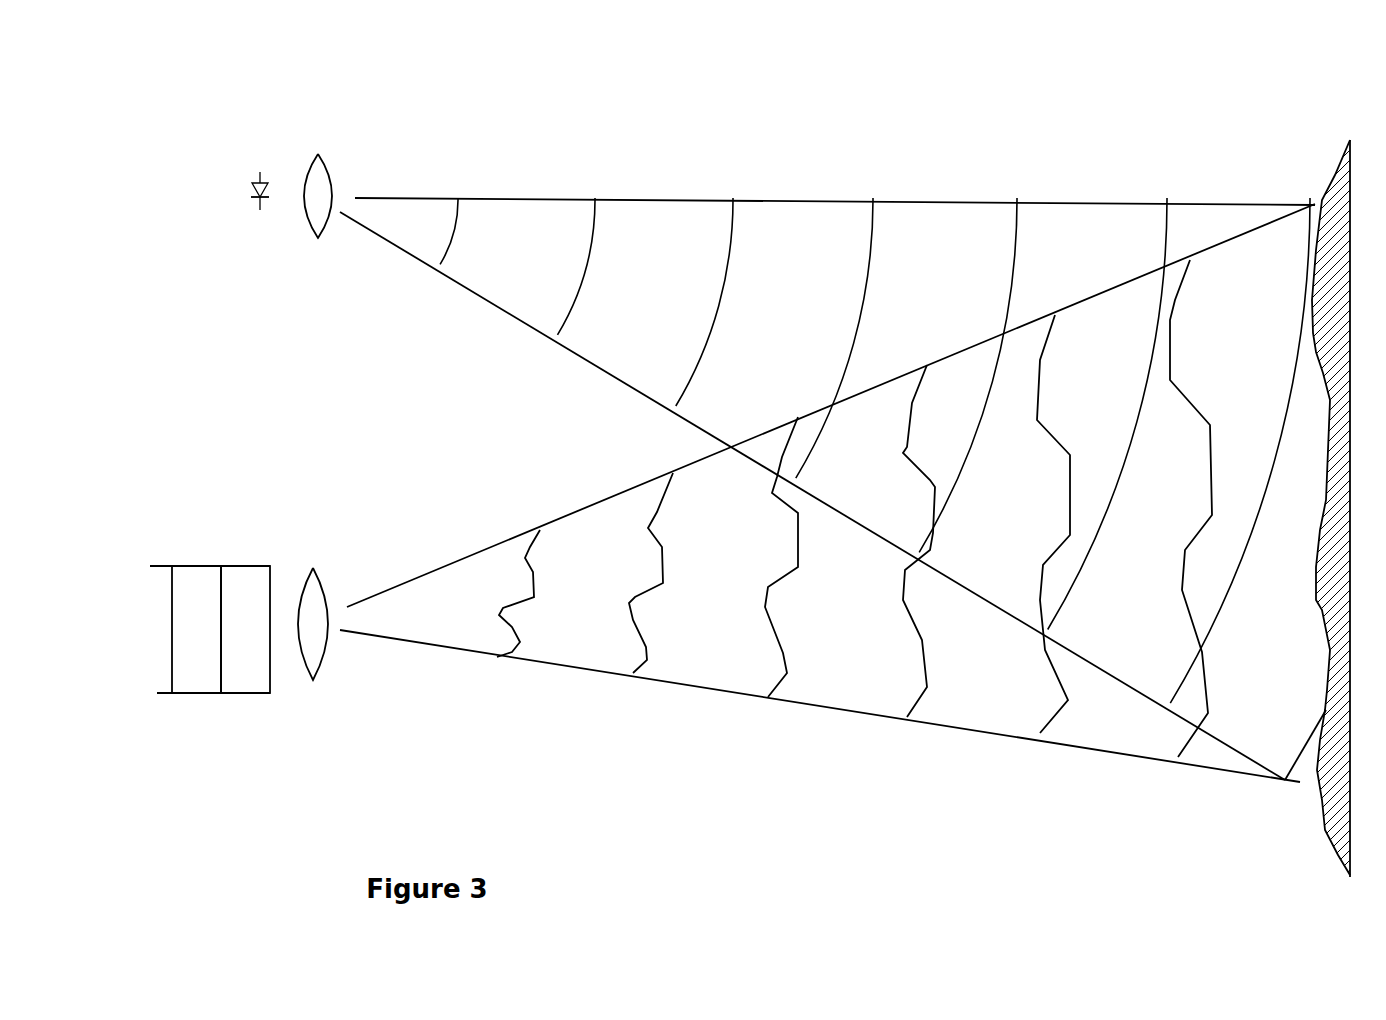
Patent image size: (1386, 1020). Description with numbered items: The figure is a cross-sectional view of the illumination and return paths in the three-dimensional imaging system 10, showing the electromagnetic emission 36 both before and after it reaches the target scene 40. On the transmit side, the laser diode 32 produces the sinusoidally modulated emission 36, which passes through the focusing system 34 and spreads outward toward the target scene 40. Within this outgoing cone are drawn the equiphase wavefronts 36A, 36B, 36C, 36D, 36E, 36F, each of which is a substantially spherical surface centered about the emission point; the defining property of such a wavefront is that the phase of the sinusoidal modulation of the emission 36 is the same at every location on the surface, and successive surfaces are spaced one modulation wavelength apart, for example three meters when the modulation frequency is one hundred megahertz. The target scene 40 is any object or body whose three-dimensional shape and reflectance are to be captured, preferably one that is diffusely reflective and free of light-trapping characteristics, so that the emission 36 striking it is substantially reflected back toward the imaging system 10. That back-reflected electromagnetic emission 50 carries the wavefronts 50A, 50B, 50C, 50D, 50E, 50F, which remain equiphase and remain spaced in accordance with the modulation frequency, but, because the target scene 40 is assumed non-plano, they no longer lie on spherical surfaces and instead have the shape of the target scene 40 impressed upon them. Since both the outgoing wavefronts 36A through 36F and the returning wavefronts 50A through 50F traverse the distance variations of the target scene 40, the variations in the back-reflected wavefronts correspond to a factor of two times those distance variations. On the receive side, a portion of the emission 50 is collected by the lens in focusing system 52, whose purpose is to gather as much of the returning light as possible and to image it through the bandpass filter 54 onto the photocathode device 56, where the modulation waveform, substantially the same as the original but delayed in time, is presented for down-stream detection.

The three-dimensional imaging system 10 is at (294, 73).
The laser diode 32 is at (262, 232).
The focusing system 34 is at (320, 253).
The electromagnetic emission 36 is at (481, 260).
The equiphase wavefront 36A is at (594, 186).
The equiphase wavefront 36B is at (733, 186).
The equiphase wavefront 36C is at (873, 186).
The equiphase wavefront 36D is at (1018, 186).
The equiphase wavefront 36E is at (1167, 186).
The equiphase wavefront 36F is at (1308, 186).
The target scene 40 is at (1360, 150).
The back-reflected electromagnetic emission 50 is at (833, 680).
The back-reflected wavefront 50A is at (498, 680).
The back-reflected wavefront 50B is at (637, 700).
The back-reflected wavefront 50C is at (770, 715).
The back-reflected wavefront 50D is at (905, 742).
The back-reflected wavefront 50E is at (1042, 762).
The back-reflected wavefront 50F is at (1183, 782).
The focusing system 52 is at (315, 695).
The bandpass filter 54 is at (250, 708).
The photocathode device 56 is at (200, 708).